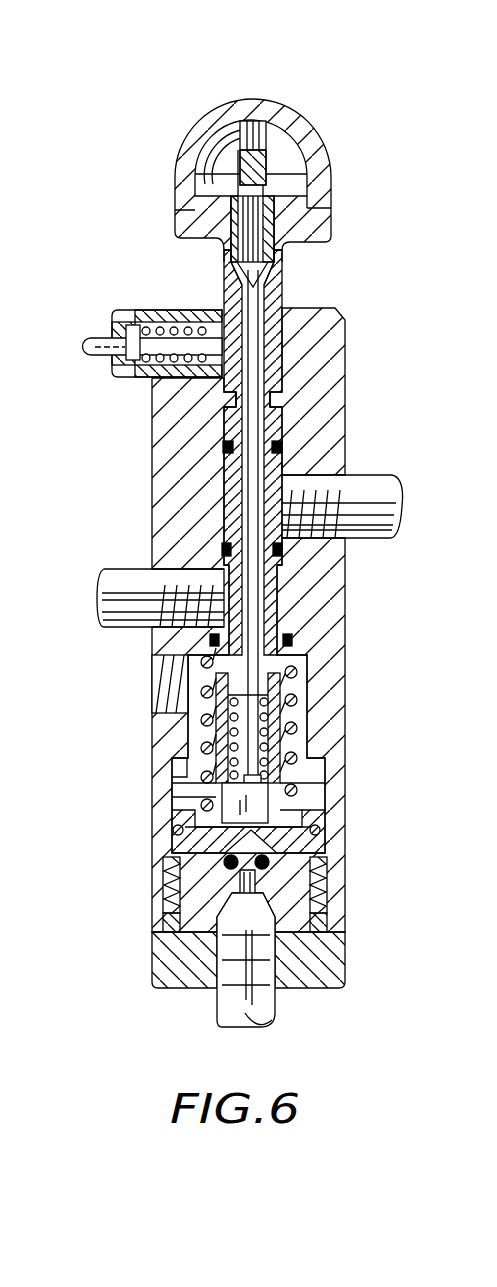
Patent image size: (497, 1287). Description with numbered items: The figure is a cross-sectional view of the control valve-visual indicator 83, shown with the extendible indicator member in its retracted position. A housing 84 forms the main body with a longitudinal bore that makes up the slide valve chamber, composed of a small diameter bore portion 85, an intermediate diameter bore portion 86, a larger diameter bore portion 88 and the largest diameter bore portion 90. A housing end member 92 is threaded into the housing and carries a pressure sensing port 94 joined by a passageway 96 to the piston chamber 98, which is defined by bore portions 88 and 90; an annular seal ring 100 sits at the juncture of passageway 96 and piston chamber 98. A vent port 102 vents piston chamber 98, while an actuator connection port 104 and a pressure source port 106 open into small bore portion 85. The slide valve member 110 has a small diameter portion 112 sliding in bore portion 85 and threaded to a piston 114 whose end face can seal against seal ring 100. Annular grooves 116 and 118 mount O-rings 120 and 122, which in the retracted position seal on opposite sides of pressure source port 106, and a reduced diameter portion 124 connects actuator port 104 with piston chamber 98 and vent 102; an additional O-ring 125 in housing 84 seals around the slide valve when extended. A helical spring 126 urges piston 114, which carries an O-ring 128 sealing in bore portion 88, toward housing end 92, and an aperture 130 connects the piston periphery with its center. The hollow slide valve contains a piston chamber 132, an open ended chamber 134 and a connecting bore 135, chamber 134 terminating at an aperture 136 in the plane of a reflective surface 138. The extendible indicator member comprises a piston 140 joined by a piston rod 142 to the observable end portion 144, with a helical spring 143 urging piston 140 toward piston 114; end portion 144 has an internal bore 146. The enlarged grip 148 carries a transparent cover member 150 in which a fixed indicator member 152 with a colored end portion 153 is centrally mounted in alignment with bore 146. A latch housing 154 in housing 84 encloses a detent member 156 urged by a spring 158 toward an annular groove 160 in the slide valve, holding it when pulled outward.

The control valve-visual indicator 83 is at (349, 180).
The housing 84 is at (337, 395).
The small diameter bore portion 85 is at (270, 312).
The intermediate diameter bore portion 86 is at (307, 662).
The larger diameter bore portion 88 is at (265, 745).
The largest diameter bore portion 90 is at (325, 812).
The housing end member 92 is at (167, 968).
The pressure sensing port 94 is at (267, 993).
The passageway 96 is at (253, 878).
The piston chamber 98 is at (172, 780).
The annular seal ring 100 is at (223, 862).
The vent port 102 is at (160, 683).
The actuator connection port 104 is at (163, 590).
The pressure source port 106 is at (330, 493).
The slide valve member 110 is at (303, 462).
The small diameter portion 112 is at (237, 472).
The piston 114 is at (175, 847).
The annular groove 116 is at (225, 547).
The annular groove 118 is at (220, 462).
The O-ring 120 is at (280, 548).
The O-ring 122 is at (282, 447).
The reduced diameter portion 124 is at (280, 597).
The O-ring 125 is at (208, 645).
The helical spring 126 is at (180, 795).
The O-ring 128 is at (320, 832).
The aperture 130 is at (300, 812).
The piston chamber 132 is at (263, 732).
The open ended chamber 134 is at (275, 232).
The bore 135 is at (243, 288).
The aperture 136 is at (283, 182).
The reflective surface 138 is at (212, 175).
The piston 140 is at (258, 785).
The piston rod 142 is at (248, 690).
The helical spring 143 is at (243, 720).
The observable end portion 144 is at (237, 230).
The internal bore 146 is at (267, 170).
The grip 148 is at (192, 225).
The transparent cover member 150 is at (207, 117).
The fixed indicator member 152 is at (250, 143).
The end portion 153 is at (262, 200).
The latch housing 154 is at (112, 320).
The detent member 156 is at (120, 370).
The spring 158 is at (138, 377).
The annular groove 160 is at (278, 403).